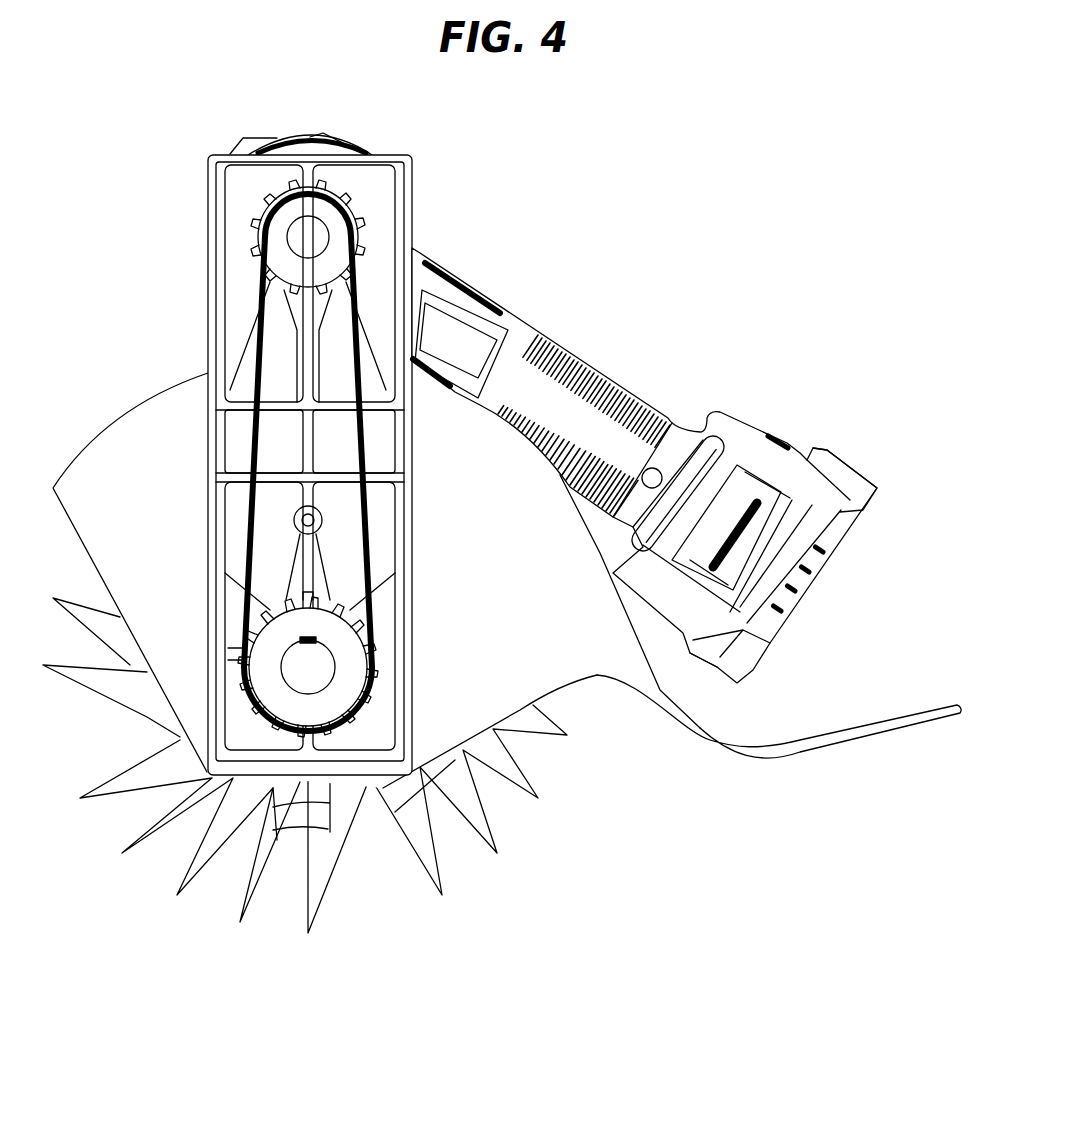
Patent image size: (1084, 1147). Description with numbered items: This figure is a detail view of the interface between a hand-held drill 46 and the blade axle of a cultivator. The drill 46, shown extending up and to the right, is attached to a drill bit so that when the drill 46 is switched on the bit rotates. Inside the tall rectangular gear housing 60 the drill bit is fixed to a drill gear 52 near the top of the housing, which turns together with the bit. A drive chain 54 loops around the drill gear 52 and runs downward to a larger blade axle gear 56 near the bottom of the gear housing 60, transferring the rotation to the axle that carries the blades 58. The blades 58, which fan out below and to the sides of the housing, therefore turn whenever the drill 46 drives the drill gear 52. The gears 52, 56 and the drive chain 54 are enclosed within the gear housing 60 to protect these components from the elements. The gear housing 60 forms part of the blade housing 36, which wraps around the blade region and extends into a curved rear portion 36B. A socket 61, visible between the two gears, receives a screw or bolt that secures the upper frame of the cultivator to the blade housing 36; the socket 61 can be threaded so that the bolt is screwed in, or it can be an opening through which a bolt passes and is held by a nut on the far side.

The blade housing 36 is at (108, 428).
The fender rear portion 36B is at (903, 727).
The drill 46 is at (578, 360).
The drill gear 52 is at (268, 237).
The drive chain 54 is at (262, 382).
The blade axle gear 56 is at (265, 655).
The blades 58 is at (325, 906).
The gear housing 60 is at (410, 195).
The socket 61 is at (324, 520).